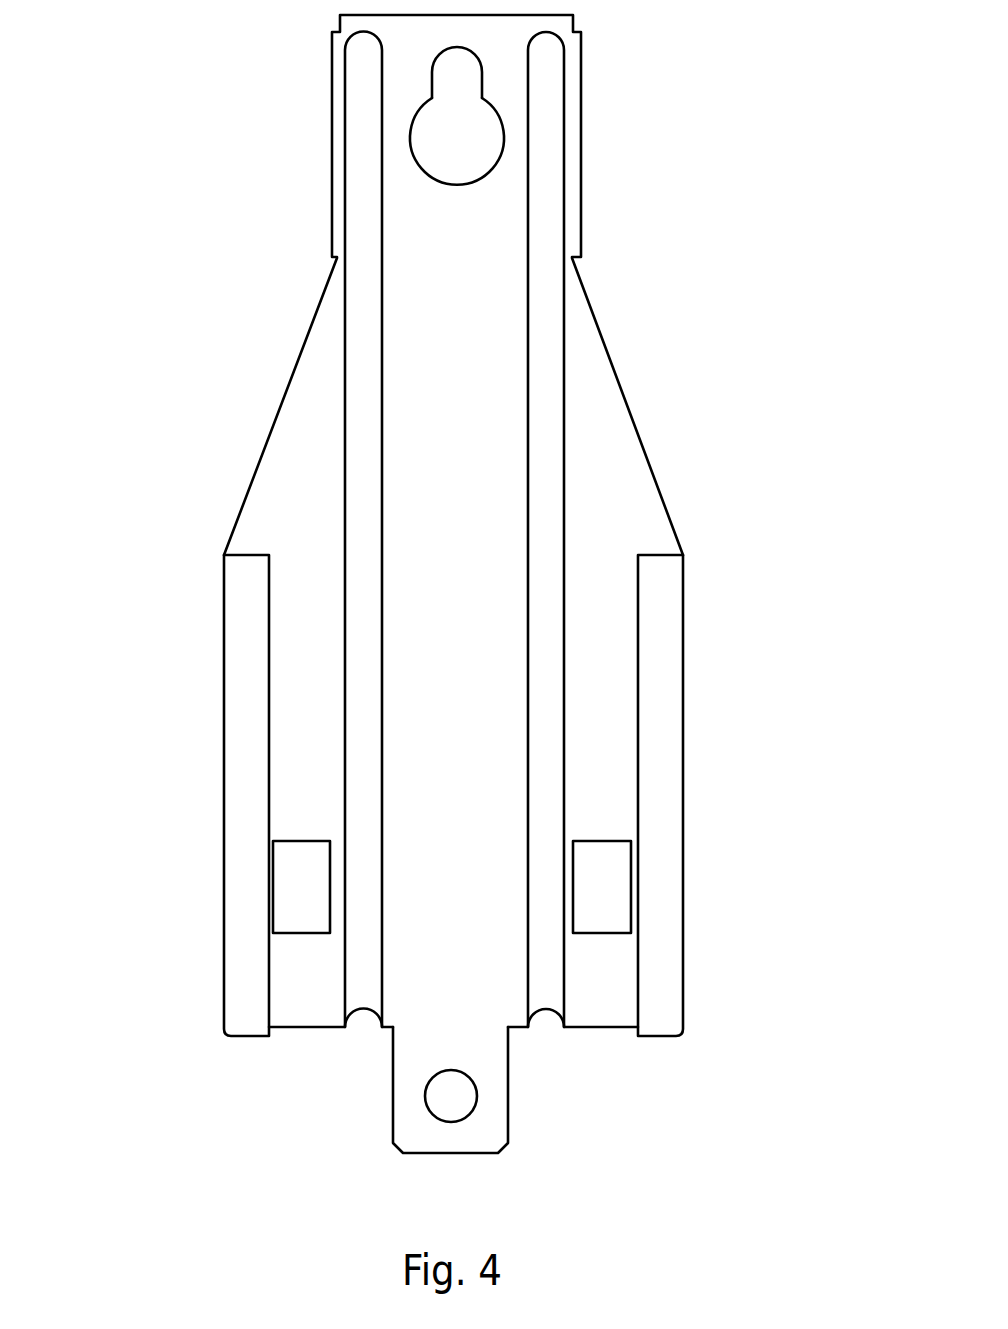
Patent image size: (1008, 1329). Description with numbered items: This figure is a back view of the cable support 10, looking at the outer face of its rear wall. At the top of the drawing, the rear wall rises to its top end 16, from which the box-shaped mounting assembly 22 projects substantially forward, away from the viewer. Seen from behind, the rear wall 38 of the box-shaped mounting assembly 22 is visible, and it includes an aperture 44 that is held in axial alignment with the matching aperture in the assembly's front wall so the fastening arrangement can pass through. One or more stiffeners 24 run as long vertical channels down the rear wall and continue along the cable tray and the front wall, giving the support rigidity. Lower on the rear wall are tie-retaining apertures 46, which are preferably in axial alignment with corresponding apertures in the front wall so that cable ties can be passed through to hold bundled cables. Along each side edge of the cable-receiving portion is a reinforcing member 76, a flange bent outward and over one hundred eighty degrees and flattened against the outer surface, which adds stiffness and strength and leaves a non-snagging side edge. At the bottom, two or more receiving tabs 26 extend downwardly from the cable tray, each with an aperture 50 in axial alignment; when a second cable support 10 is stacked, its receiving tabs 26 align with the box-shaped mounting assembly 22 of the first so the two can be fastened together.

The cable support 10 is at (238, 314).
The top end 16 is at (334, 257).
The box-shaped mounting assembly 22 is at (573, 48).
The stiffeners 24 is at (362, 438).
The receiving tabs 26 is at (413, 1139).
The rear wall 38 is at (426, 75).
The apertures 44 is at (455, 138).
The tie-retaining apertures 46 is at (303, 887).
The apertures 50 is at (452, 1105).
The reinforcing member 76 is at (260, 620).